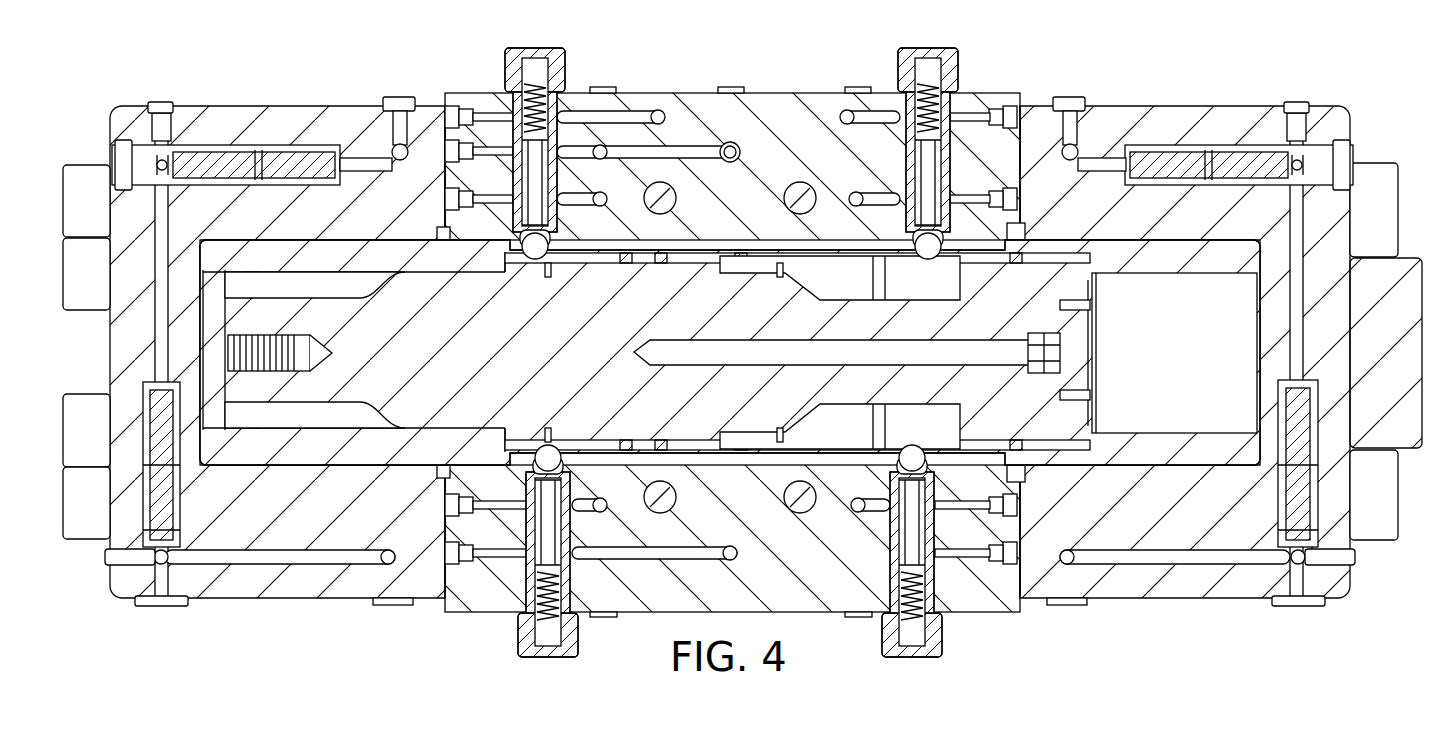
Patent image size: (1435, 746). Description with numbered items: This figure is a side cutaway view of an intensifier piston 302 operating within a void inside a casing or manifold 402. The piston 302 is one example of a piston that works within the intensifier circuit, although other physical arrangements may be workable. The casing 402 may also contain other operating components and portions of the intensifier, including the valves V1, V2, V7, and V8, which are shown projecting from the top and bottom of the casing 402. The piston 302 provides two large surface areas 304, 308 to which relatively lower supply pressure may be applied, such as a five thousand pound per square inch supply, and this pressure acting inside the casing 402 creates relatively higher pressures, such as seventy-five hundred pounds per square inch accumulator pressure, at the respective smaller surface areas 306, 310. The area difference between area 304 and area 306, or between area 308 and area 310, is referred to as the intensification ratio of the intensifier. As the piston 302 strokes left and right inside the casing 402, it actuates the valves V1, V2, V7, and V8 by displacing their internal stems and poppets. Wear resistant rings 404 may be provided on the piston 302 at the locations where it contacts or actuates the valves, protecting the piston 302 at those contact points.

The piston 302 is at (619, 331).
The large surface area 304 is at (480, 298).
The smaller surface area 306 is at (1095, 318).
The large surface area 308 is at (806, 284).
The smaller surface area 310 is at (262, 374).
The casing or manifold 402 is at (1176, 598).
The wear resistant rings 404 is at (548, 428).
The valve V1 is at (947, 659).
The valve V2 is at (961, 45).
The valve V7 is at (503, 46).
The valve V8 is at (517, 658).